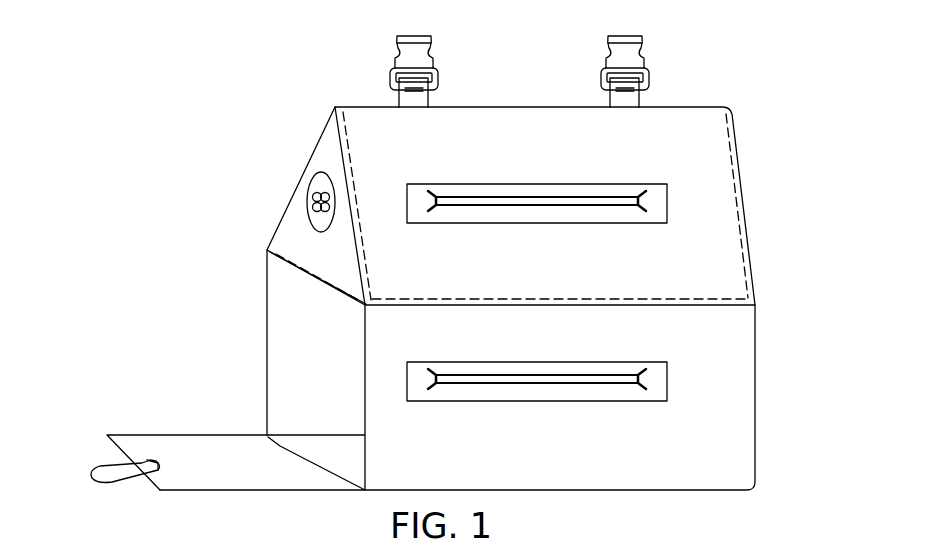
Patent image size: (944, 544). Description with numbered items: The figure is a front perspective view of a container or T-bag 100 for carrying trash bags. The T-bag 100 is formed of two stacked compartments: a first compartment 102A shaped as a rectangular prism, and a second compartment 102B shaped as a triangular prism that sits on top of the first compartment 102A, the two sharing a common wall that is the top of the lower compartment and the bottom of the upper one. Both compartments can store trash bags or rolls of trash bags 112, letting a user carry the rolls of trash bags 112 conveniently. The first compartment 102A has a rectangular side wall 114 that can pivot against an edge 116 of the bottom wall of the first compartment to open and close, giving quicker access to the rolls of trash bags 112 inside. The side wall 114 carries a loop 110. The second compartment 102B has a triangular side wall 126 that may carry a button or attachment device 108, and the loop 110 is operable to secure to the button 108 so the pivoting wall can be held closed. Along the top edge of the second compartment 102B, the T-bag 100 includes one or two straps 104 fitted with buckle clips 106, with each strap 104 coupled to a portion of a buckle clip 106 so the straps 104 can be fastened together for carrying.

The T-bag 100 is at (451, 248).
The first compartment 102A is at (292, 334).
The second compartment 102B is at (276, 208).
The strap 104 is at (435, 99).
The buckle clip 106 is at (441, 56).
The button 108 is at (314, 200).
The loop 110 is at (107, 472).
The rolls of trash bags 112 is at (610, 203).
The side wall 114 is at (172, 447).
The edge 116 is at (297, 462).
The side wall 126 is at (282, 252).